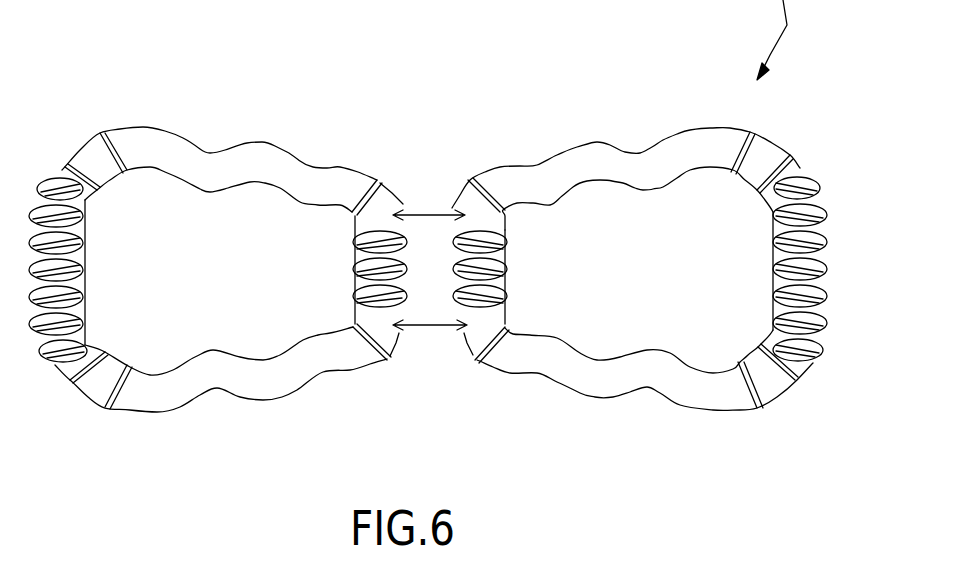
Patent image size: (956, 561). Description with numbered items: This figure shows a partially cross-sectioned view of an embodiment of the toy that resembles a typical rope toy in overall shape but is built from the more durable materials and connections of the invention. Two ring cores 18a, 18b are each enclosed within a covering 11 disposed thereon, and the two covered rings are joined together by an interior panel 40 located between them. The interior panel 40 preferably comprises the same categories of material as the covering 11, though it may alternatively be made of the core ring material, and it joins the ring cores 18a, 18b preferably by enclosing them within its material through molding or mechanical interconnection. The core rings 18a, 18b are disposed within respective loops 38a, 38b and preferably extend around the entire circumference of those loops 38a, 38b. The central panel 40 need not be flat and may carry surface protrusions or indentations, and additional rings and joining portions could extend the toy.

The covering 11 is at (88, 140).
The ring core 18a is at (257, 140).
The ring core 18b is at (607, 157).
The loop 38a is at (390, 347).
The loop 38b is at (487, 327).
The interior panel 40 is at (415, 213).